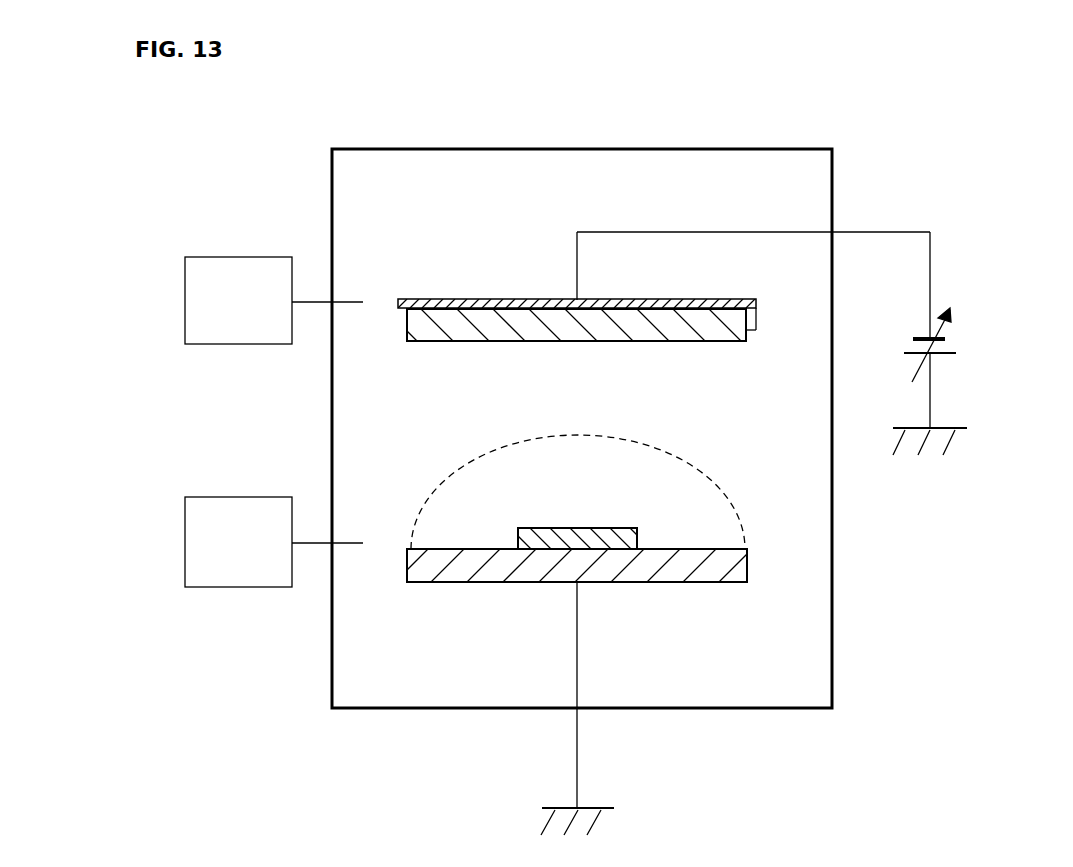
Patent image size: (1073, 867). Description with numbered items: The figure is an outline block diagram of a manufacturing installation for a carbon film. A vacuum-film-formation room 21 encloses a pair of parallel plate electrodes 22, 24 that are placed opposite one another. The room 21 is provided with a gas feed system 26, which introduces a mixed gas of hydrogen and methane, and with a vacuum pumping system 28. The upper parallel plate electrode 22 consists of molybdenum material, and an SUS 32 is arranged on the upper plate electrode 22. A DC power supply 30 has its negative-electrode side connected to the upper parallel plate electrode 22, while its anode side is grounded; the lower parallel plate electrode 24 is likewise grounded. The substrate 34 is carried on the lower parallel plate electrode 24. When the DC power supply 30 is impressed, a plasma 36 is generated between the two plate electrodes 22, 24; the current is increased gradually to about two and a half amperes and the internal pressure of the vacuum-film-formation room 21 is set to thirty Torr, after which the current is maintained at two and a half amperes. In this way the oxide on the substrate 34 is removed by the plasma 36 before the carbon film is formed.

The vacuum-film-formation room 21 is at (762, 147).
The upper parallel plate electrode 22 is at (643, 342).
The lower parallel plate electrode 24 is at (672, 582).
The gas feed system 26 is at (231, 257).
The vacuum pumping system 28 is at (220, 497).
The DC power supply 30 is at (955, 330).
The SUS 32 is at (714, 282).
The substrate 34 is at (575, 527).
The plasma 36 is at (672, 448).